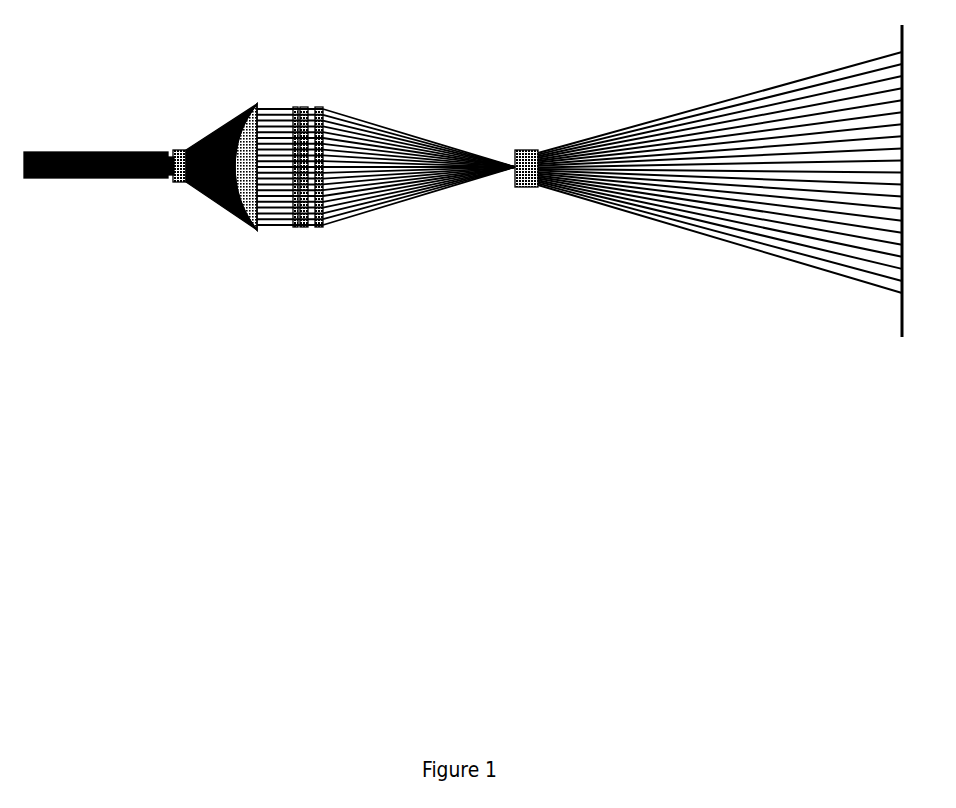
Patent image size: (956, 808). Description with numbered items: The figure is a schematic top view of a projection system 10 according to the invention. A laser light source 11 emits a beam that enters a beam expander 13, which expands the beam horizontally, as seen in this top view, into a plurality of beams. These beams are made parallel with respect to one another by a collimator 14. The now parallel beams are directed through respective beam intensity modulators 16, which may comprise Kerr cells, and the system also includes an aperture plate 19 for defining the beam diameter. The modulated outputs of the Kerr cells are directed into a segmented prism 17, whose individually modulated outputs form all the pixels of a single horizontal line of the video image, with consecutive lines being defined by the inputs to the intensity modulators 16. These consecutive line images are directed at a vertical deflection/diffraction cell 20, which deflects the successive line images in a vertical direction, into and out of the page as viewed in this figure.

The projection system 10 is at (463, 190).
The laser light source 11 is at (99, 178).
The beam expander 13 is at (147, 219).
The collimator 14 is at (196, 231).
The beam intensity modulators 16 is at (344, 237).
The segmented prism 17 is at (361, 197).
The aperture plate 19 is at (281, 228).
The vertical deflection/diffraction cell 20 is at (581, 232).